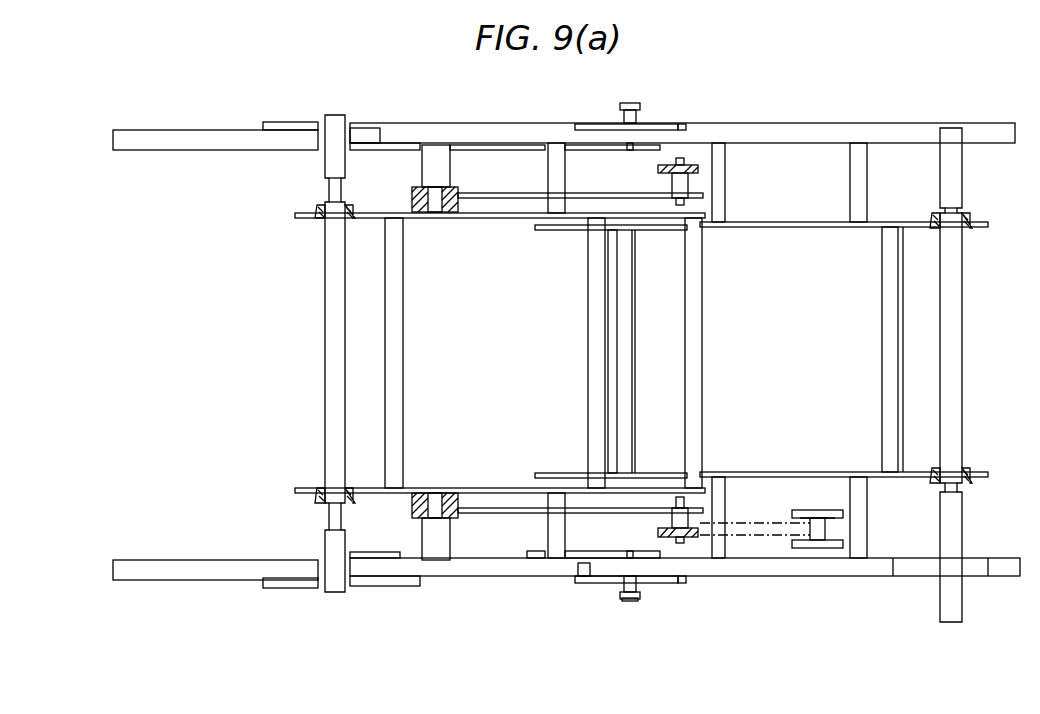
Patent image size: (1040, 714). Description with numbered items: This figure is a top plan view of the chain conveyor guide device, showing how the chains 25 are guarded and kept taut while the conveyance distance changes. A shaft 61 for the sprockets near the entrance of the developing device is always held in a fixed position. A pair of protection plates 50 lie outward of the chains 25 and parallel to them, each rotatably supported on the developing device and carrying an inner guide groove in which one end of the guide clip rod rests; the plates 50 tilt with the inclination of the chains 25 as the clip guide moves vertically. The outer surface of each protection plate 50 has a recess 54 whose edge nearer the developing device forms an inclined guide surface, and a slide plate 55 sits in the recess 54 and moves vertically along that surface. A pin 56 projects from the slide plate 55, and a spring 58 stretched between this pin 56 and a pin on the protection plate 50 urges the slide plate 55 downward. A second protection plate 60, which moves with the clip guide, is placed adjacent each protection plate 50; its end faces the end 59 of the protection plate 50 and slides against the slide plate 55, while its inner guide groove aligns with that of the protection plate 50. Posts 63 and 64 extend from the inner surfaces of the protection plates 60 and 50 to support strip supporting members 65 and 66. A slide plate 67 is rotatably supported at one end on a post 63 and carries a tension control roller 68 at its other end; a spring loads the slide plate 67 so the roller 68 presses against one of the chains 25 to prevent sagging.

The chain 25 is at (757, 525).
The protection plate 50 is at (838, 133).
The recess 54 is at (682, 125).
The slide plate 55 is at (658, 126).
The pin 56 is at (620, 106).
The spring 58 is at (640, 600).
The end of the protection plate 59 is at (588, 574).
The protection plate 60 is at (508, 132).
The shaft 61 is at (962, 368).
The post 63 is at (445, 167).
The post 64 is at (722, 196).
The strip supporting member 65 is at (497, 218).
The strip supporting member 66 is at (818, 227).
The slide plate 67 is at (618, 193).
The tension control roller 68 is at (700, 185).